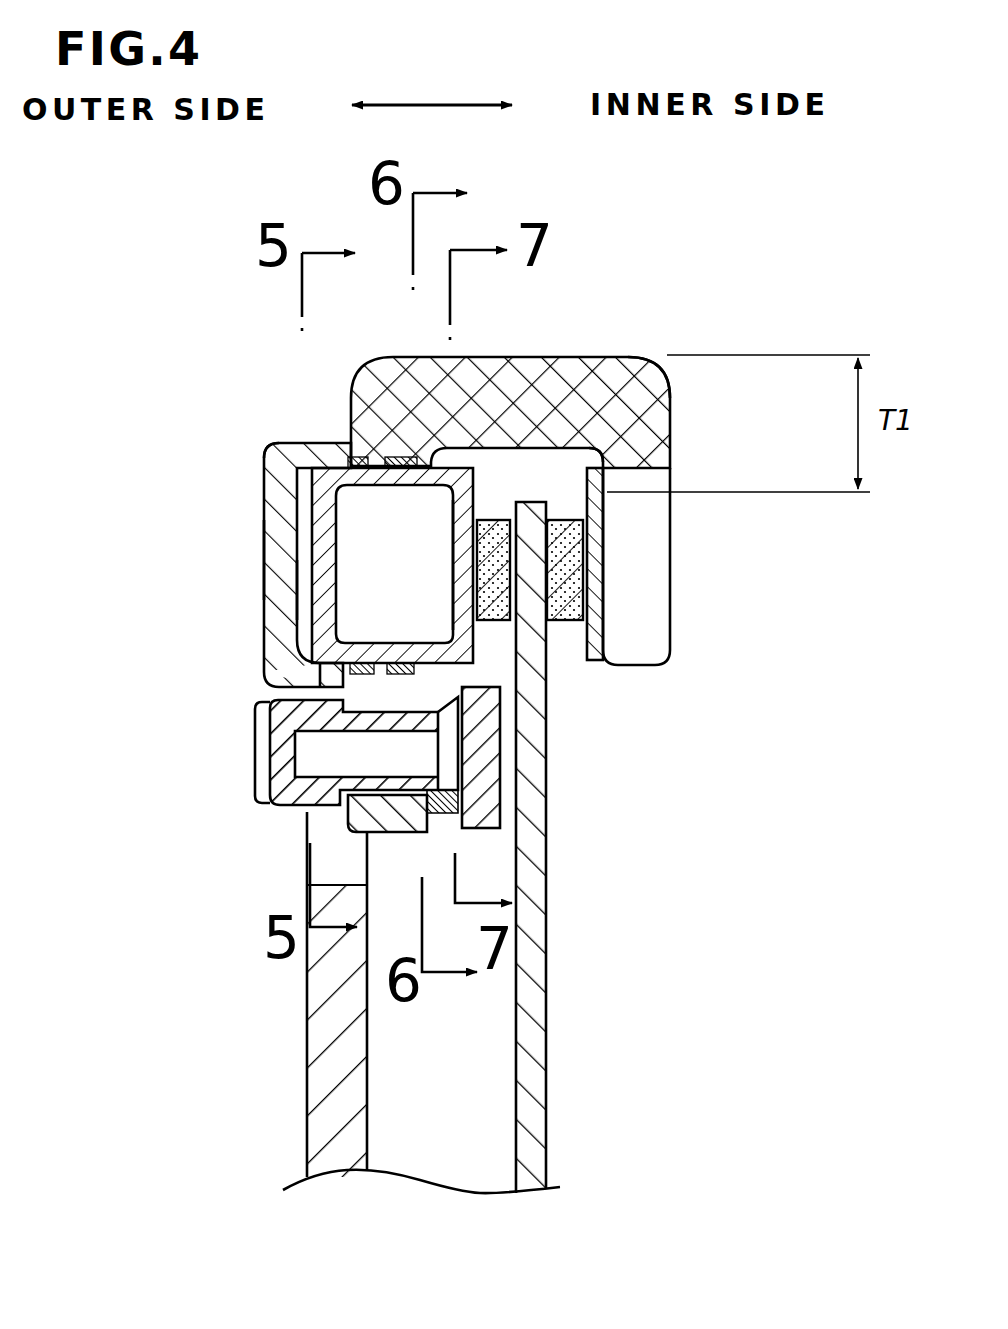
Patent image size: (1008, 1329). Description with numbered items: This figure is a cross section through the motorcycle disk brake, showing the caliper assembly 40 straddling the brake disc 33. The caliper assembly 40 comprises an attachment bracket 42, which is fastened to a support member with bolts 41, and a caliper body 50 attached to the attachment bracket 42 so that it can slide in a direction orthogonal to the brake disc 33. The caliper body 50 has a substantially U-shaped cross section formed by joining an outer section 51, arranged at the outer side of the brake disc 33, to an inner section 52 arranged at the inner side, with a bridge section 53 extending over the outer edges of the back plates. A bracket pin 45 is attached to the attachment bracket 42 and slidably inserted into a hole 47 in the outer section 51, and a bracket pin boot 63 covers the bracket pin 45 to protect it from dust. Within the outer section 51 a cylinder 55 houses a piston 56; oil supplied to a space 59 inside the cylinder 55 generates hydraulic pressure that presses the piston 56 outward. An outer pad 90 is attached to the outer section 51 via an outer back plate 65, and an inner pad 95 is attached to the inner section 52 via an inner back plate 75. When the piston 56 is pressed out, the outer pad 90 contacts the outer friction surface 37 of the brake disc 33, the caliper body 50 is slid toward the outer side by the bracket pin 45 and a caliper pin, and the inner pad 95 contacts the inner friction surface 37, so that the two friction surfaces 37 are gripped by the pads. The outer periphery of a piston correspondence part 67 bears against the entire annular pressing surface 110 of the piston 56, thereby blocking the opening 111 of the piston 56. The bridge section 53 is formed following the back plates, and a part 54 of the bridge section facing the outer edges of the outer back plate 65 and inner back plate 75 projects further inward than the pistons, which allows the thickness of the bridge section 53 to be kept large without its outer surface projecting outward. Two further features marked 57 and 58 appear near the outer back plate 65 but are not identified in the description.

The caliper assembly 40 is at (188, 288).
The bridge section 53 is at (503, 485).
The inner section 52 is at (670, 598).
The inner back plate 75 is at (605, 480).
The inner pad 95 is at (668, 393).
The part of the bridge section 54 is at (600, 466).
The outer pad 90 is at (561, 485).
The caliper body 50 is at (277, 442).
The piston 56 is at (265, 463).
The cylinder 55 is at (265, 554).
The outer section 51 is at (263, 504).
The space 59 is at (300, 591).
The outer back plate 65 is at (460, 477).
The upper projection 58 is at (352, 457).
The upper projection 57 is at (392, 455).
The hole 47 is at (393, 668).
The opening 111 is at (443, 567).
The friction surface 37 is at (477, 527).
The brake disc 33 is at (548, 940).
The piston correspondence part 67 is at (545, 637).
The annular pressing surface 110 is at (545, 737).
The bolt 41 is at (253, 713).
The bracket pin 45 is at (253, 797).
The bracket pin boot 63 is at (288, 817).
The attachment bracket 42 is at (500, 790).